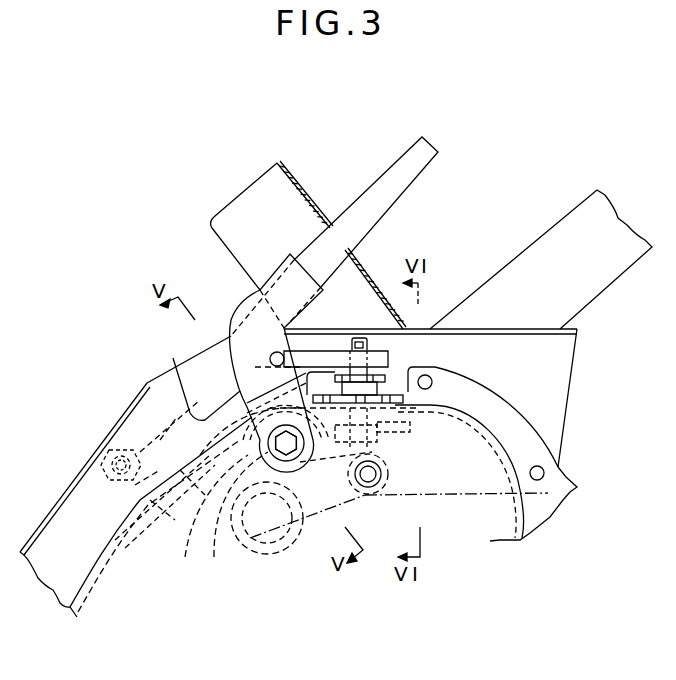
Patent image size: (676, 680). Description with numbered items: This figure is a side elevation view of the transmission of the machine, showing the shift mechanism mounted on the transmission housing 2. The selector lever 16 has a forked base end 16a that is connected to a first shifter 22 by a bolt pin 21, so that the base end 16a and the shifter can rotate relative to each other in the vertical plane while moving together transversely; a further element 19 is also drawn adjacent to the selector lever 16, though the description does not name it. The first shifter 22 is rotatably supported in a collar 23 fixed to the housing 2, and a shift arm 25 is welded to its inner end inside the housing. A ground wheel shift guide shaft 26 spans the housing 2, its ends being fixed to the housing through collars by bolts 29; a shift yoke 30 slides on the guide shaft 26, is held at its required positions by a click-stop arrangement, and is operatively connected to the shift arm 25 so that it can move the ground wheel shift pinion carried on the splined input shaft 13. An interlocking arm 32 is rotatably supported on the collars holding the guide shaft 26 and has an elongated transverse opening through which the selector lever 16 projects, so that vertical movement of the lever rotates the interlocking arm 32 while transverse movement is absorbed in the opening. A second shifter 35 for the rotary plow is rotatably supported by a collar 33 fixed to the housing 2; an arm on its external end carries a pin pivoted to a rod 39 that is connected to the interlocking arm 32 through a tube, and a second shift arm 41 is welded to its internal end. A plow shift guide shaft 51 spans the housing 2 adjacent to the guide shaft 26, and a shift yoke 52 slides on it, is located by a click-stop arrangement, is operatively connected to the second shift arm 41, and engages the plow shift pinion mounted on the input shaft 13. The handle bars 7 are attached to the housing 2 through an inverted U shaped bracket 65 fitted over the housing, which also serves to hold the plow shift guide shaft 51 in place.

The transmission housing 2 is at (88, 568).
The handle bars 7 is at (565, 227).
The input shaft 13 is at (270, 537).
The selector lever 16 is at (388, 170).
The forked base end 16a is at (115, 410).
The plate 19 is at (298, 187).
The bolt pin 21 is at (110, 437).
The first shifter 22 is at (128, 540).
The collar 23 is at (165, 474).
The shift arm 25 is at (203, 523).
The ground wheel shift guide shaft 26 is at (286, 443).
The bolts 29 is at (286, 443).
The shift yoke 30 is at (227, 517).
The interlocking arm 32 is at (247, 313).
The collar 33 is at (470, 424).
The second shifter 35 is at (389, 393).
The rod 39 is at (328, 357).
The second shift arm 41 is at (408, 445).
The plow shift guide shaft 51 is at (373, 487).
The shift yoke 52 is at (348, 488).
The inverted U shaped bracket 65 is at (564, 373).